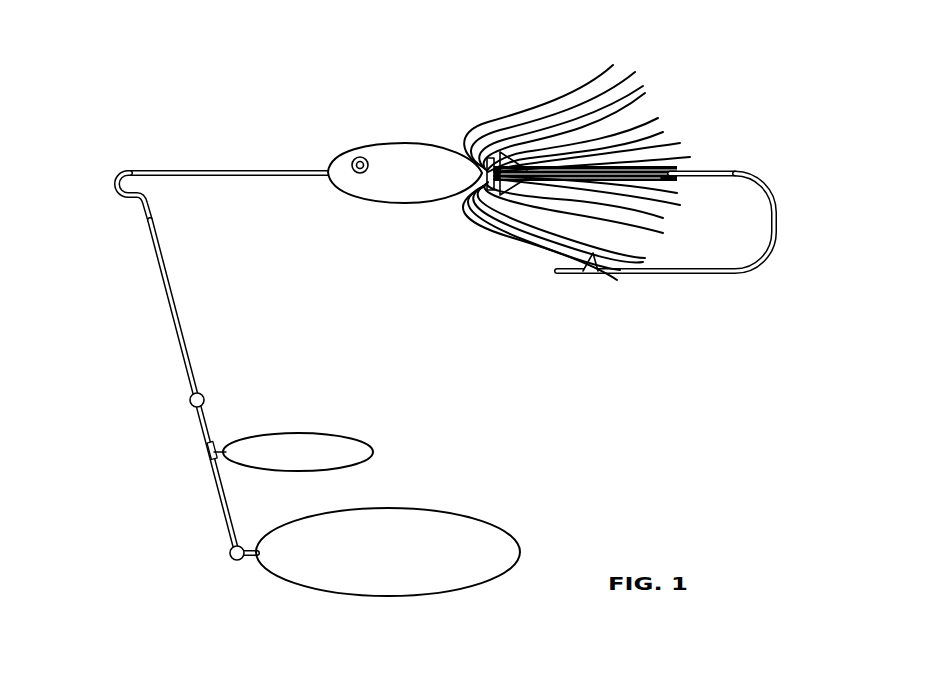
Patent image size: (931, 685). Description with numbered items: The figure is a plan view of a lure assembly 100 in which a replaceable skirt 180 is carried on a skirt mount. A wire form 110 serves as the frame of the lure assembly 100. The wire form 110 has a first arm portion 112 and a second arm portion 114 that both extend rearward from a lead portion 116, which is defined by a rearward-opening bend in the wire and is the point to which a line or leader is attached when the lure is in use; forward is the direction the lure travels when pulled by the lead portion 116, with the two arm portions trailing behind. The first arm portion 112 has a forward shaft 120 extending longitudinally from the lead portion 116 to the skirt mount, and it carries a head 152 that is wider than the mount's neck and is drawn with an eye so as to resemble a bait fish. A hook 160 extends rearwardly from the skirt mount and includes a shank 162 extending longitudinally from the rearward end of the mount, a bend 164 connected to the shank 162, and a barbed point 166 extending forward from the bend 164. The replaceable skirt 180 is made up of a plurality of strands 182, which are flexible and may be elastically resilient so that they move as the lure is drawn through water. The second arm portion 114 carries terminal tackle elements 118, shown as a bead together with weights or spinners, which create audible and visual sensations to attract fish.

The lure assembly 100 is at (240, 74).
The wire form 110 is at (233, 246).
The first arm portion 112 is at (146, 146).
The second arm portion 114 is at (133, 258).
The lead portion 116 is at (117, 183).
The terminal tackle elements 118 is at (372, 443).
The forward shaft 120 is at (285, 170).
The head 152 is at (378, 145).
The hook 160 is at (792, 174).
The shank 162 is at (710, 168).
The bend 164 is at (780, 230).
The barbed point 166 is at (575, 272).
The replaceable skirt 180 is at (485, 98).
The strands 182 is at (657, 117).